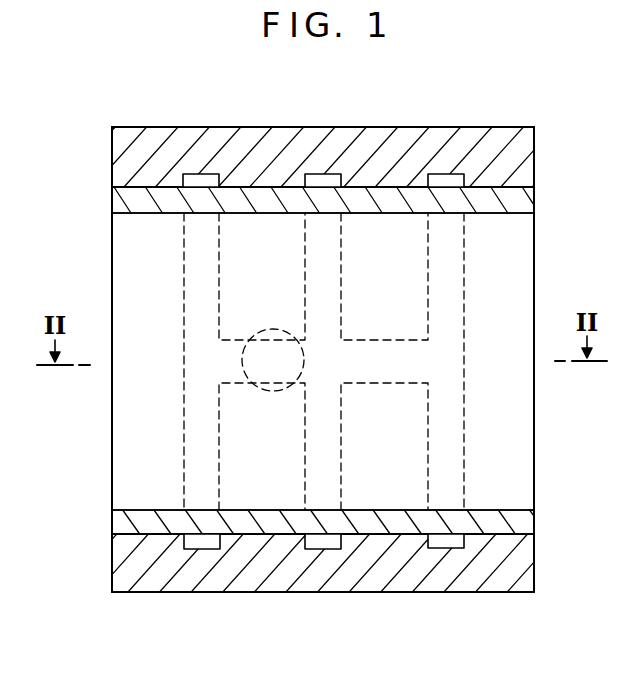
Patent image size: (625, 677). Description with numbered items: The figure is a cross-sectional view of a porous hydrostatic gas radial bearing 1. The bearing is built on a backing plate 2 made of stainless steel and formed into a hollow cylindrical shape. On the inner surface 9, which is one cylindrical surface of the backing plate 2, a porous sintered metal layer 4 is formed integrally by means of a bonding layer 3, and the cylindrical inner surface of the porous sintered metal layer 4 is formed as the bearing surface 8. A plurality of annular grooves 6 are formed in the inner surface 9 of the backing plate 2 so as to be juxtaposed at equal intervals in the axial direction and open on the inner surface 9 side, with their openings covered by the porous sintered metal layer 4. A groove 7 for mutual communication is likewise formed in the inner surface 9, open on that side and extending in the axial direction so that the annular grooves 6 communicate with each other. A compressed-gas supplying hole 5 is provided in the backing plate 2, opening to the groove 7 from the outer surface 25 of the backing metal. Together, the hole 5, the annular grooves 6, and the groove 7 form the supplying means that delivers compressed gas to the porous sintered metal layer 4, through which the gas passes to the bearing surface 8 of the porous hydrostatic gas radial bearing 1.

The porous hydrostatic gas radial bearing 1 is at (91, 303).
The backing plate 2 is at (517, 155).
The bonding layer 3 is at (522, 212).
The porous sintered metal layer 4 is at (508, 512).
The compressed-gas supplying hole 5 is at (262, 372).
The annular grooves 6 is at (203, 174).
The groove for mutual communication 7 is at (376, 373).
The bearing surface 8 is at (520, 430).
The inner surface 9 is at (150, 533).
The outer surface 25 is at (325, 127).